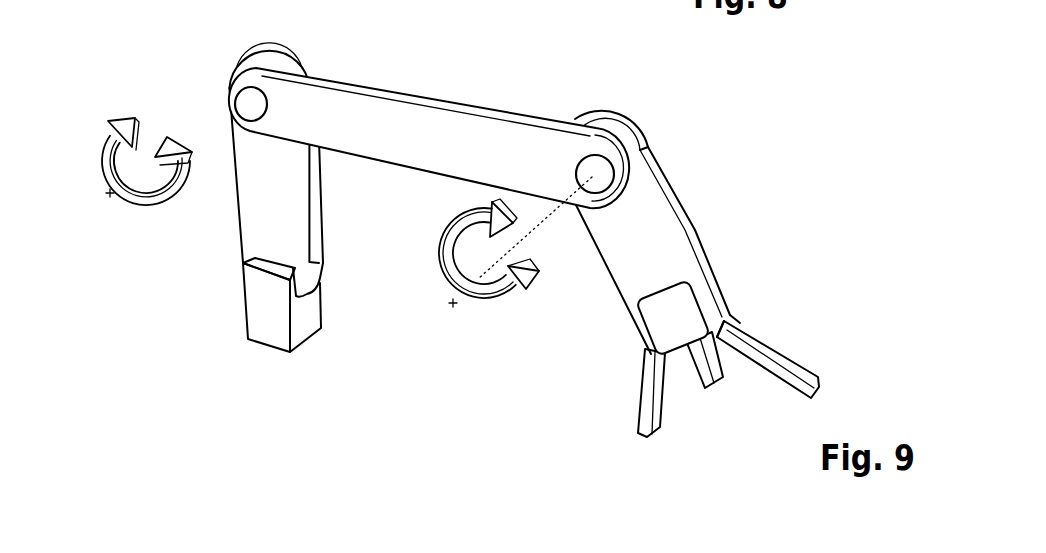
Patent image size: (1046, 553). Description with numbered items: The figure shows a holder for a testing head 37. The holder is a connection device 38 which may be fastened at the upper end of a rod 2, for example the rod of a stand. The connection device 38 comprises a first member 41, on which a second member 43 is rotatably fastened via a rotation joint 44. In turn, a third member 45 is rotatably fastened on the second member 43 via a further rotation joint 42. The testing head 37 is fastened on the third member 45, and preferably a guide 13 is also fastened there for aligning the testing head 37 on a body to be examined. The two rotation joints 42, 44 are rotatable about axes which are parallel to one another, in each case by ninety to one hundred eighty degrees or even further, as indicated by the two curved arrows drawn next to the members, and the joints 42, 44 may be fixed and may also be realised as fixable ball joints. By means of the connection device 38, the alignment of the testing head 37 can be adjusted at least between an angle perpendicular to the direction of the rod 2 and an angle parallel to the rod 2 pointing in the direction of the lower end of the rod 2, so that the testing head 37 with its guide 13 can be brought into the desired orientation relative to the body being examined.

The rod 2 is at (248, 313).
The guide 13 is at (773, 340).
The testing head 37 is at (710, 378).
The connection device 38 is at (128, 66).
The first member 41 is at (323, 217).
The joint 42 is at (239, 103).
The second member 43 is at (430, 113).
The rotation joint 44 is at (589, 165).
The third member 45 is at (677, 187).